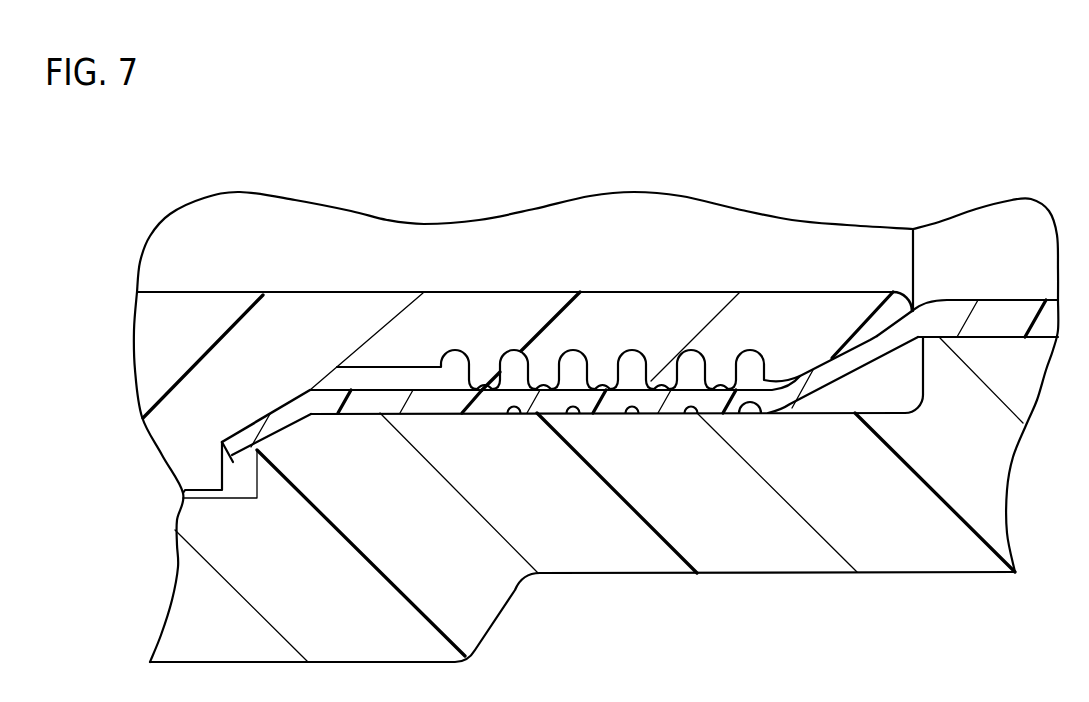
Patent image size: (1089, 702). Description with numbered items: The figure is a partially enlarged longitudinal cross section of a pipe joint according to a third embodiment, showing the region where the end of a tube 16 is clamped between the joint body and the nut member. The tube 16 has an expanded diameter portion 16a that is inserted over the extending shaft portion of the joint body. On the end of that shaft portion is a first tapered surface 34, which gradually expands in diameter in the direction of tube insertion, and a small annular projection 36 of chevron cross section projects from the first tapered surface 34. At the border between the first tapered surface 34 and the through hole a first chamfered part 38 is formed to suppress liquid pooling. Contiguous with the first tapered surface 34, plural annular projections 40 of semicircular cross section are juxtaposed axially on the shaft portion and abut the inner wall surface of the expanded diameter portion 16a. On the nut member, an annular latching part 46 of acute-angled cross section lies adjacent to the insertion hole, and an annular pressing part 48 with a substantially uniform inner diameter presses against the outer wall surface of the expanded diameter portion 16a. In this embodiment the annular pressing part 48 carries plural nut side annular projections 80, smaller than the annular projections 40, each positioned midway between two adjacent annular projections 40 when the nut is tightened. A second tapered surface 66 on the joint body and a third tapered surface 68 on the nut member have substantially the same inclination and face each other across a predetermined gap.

The tube 16 is at (998, 318).
The expanded diameter portion 16a is at (442, 404).
The first tapered surface 34 is at (896, 322).
The small annular projection 36 is at (876, 335).
The first chamfered part 38 is at (907, 292).
The annular projections 40 is at (600, 378).
The annular latching part 46 is at (935, 333).
The annular pressing part 48 is at (761, 406).
The second tapered surface 66 is at (290, 405).
The third tapered surface 68 is at (274, 428).
The nut side annular projections 80 is at (632, 417).